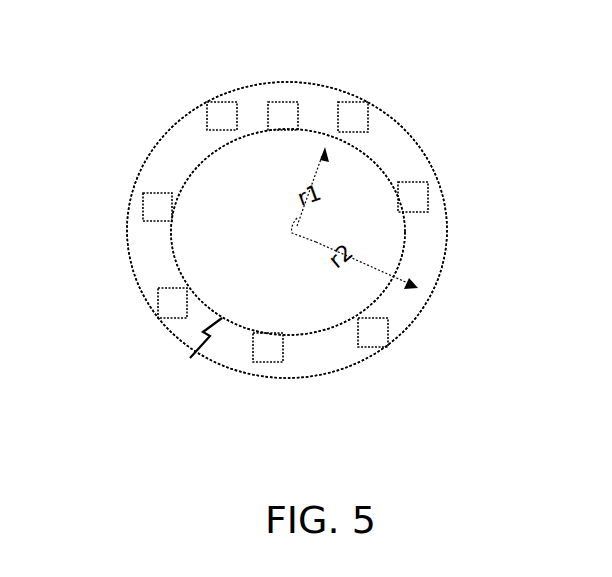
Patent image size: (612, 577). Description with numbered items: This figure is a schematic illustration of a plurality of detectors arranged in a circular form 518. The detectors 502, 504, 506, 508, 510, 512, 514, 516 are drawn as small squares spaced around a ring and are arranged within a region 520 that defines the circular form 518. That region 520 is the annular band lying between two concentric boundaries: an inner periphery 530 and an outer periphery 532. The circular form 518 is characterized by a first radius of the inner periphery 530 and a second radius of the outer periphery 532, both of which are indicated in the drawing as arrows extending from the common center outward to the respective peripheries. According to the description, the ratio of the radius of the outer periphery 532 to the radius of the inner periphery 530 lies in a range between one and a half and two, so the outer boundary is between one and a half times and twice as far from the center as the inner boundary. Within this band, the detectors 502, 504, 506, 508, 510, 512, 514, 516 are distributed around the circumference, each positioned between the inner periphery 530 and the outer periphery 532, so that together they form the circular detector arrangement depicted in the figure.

The detector 502 is at (365, 104).
The detector 504 is at (420, 189).
The detector 506 is at (372, 332).
The detector 508 is at (266, 346).
The detector 510 is at (172, 298).
The detector 512 is at (158, 202).
The detector 514 is at (218, 113).
The detector 516 is at (288, 110).
The circular form 518 is at (311, 84).
The region 520 is at (182, 148).
The inner periphery 530 is at (185, 353).
The outer periphery 532 is at (338, 368).